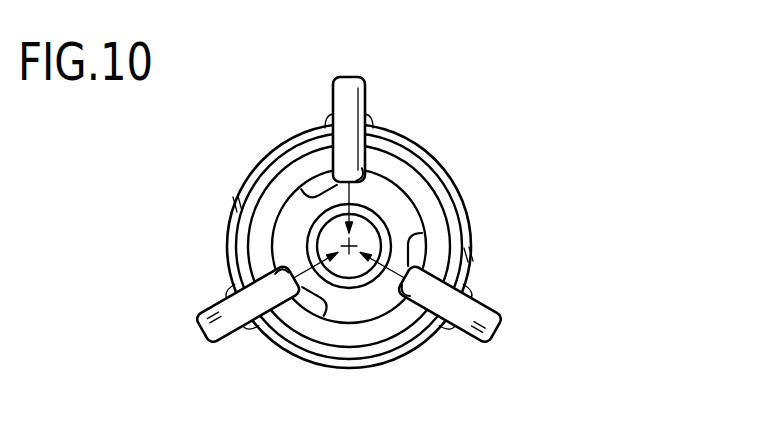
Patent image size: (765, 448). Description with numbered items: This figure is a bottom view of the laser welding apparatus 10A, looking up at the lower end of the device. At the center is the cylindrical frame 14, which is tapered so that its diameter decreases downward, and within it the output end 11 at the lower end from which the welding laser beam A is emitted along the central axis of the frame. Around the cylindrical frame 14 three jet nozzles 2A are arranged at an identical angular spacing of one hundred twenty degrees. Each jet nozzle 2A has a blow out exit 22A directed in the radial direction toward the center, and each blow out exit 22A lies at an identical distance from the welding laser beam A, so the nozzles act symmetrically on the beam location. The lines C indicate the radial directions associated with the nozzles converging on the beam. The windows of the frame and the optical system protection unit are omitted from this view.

The laser welding apparatus 10A is at (574, 96).
The cylindrical frame 14 is at (275, 193).
The output end 11 is at (352, 290).
The welding laser beam A is at (349, 246).
The pad center line C is at (350, 193).
The jet nozzle 2A is at (349, 77).
The blow out exit 22A is at (330, 193).